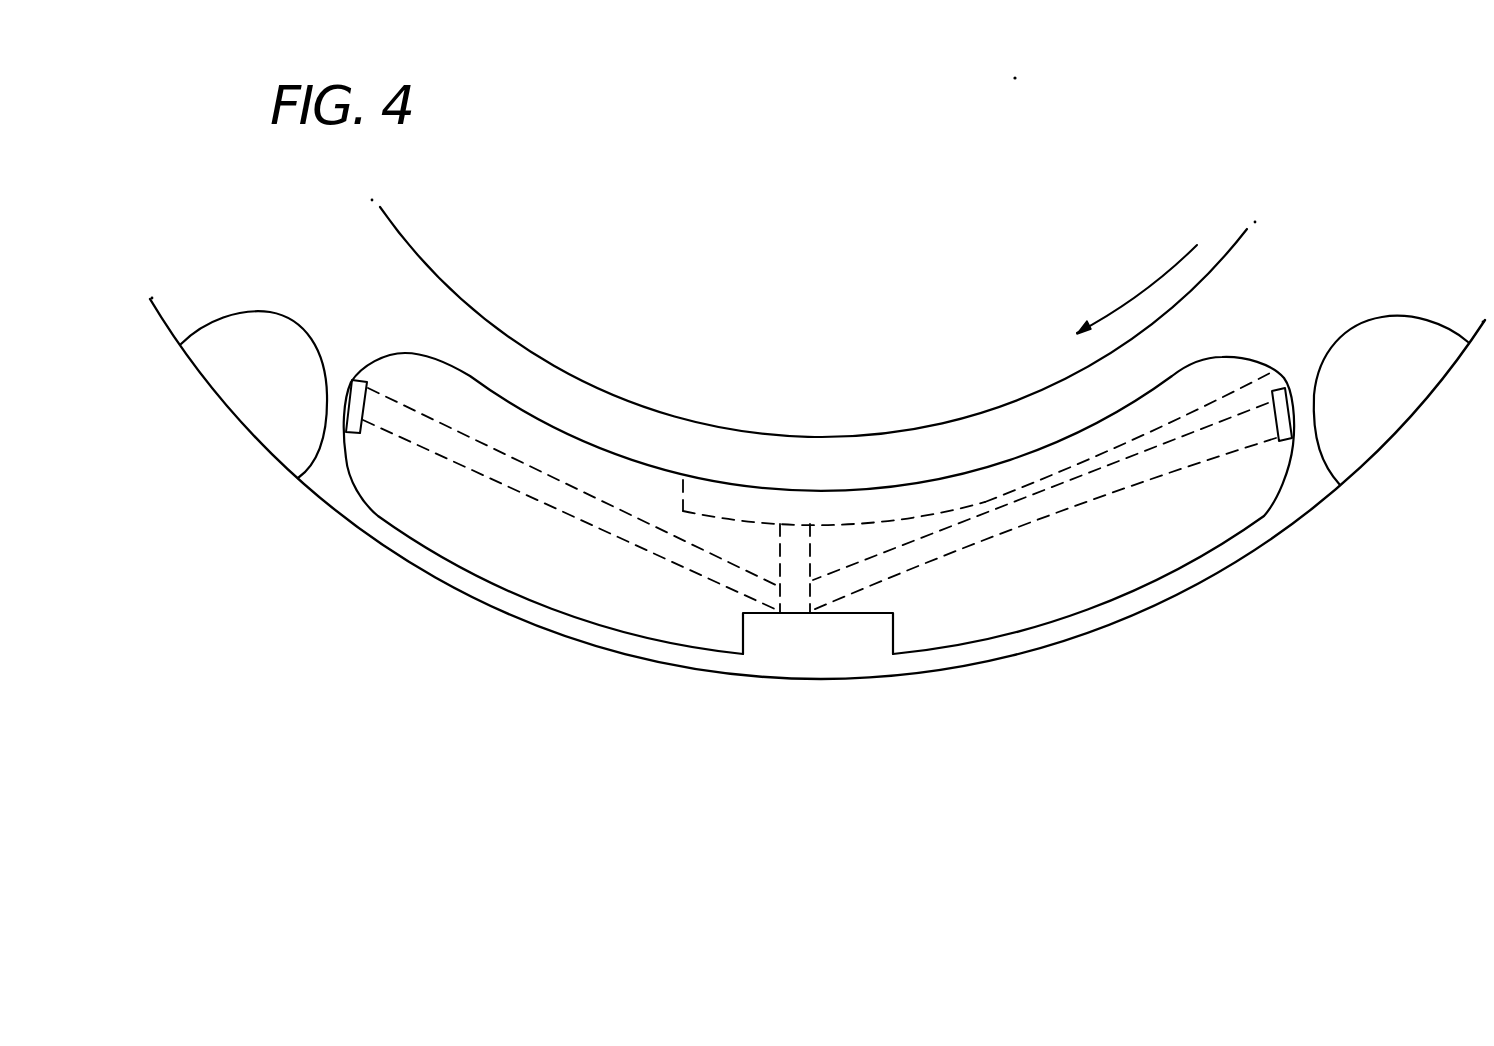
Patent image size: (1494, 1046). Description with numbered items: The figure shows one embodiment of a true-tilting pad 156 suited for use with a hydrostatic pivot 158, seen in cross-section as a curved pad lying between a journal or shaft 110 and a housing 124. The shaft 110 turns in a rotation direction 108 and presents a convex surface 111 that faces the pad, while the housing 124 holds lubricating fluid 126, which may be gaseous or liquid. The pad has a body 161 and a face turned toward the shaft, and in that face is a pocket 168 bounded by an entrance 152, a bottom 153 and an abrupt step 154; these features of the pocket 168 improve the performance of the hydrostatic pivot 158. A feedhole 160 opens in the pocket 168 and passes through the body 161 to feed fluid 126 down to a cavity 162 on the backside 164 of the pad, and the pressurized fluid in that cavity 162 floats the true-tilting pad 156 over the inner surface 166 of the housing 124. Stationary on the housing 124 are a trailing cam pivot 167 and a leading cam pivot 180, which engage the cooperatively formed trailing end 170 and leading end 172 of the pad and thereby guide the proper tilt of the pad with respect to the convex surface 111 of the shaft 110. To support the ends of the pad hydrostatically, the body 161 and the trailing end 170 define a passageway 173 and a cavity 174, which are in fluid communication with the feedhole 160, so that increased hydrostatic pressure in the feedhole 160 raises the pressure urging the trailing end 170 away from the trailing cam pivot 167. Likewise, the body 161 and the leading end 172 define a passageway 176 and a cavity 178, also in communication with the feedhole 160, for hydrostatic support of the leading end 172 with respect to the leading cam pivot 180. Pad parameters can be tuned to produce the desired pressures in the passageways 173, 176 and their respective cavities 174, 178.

The rotation direction 108 is at (1148, 300).
The journal or shaft 110 is at (703, 362).
The convex surface 111 is at (386, 222).
The housing 124 is at (268, 567).
The lubricating fluid 126 is at (583, 420).
The entrance 152 is at (1240, 358).
The bottom 153 is at (985, 493).
The abrupt step 154 is at (687, 498).
The true-tilting pad 156 is at (517, 583).
The hydrostatic pivot 158 is at (767, 648).
The feedhole 160 is at (812, 542).
The body 161 is at (1155, 560).
The cavity 162 is at (850, 657).
The backside 164 is at (1048, 623).
The inner surface 166 is at (1473, 332).
The trailing cam pivot 167 is at (246, 310).
The pocket 168 is at (1129, 405).
The trailing end 170 is at (388, 353).
The leading end 172 is at (1283, 377).
The passageway 173 is at (495, 447).
The cavity 174 is at (343, 388).
The passageway 176 is at (1068, 478).
The cavity 178 is at (1295, 398).
The leading cam pivot 180 is at (1383, 318).